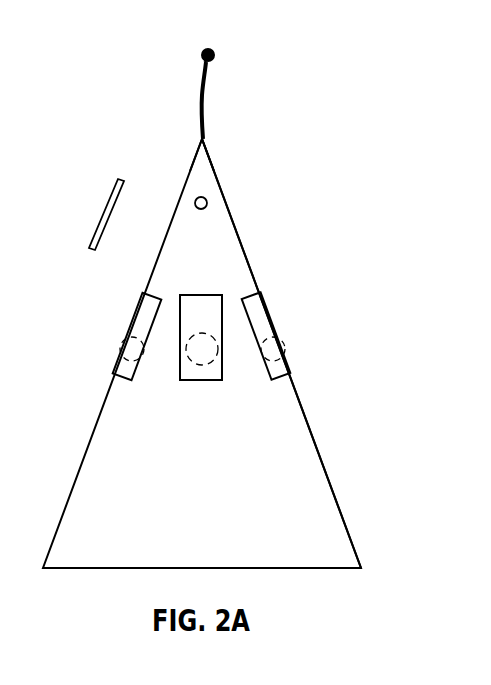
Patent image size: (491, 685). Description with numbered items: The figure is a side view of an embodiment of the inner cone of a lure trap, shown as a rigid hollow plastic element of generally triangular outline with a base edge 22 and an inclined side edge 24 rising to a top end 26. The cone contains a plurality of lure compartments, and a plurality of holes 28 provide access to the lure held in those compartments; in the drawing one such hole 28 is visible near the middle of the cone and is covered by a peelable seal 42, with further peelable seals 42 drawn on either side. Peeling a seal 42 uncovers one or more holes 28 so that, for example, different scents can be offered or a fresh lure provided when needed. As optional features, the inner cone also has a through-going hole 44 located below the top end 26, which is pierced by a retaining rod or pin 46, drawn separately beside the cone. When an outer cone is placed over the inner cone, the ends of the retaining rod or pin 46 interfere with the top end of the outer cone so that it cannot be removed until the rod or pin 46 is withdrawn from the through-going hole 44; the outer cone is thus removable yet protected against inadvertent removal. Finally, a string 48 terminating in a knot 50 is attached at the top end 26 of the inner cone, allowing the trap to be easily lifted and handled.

The base edge 22 is at (322, 569).
The side edge 24 is at (318, 484).
The top end 26 is at (193, 162).
The holes 28 is at (210, 363).
The peelable seals 42 is at (263, 296).
The through-going hole 44 is at (208, 203).
The retaining rod or pin 46 is at (99, 215).
The string 48 is at (203, 104).
The knot 50 is at (210, 50).